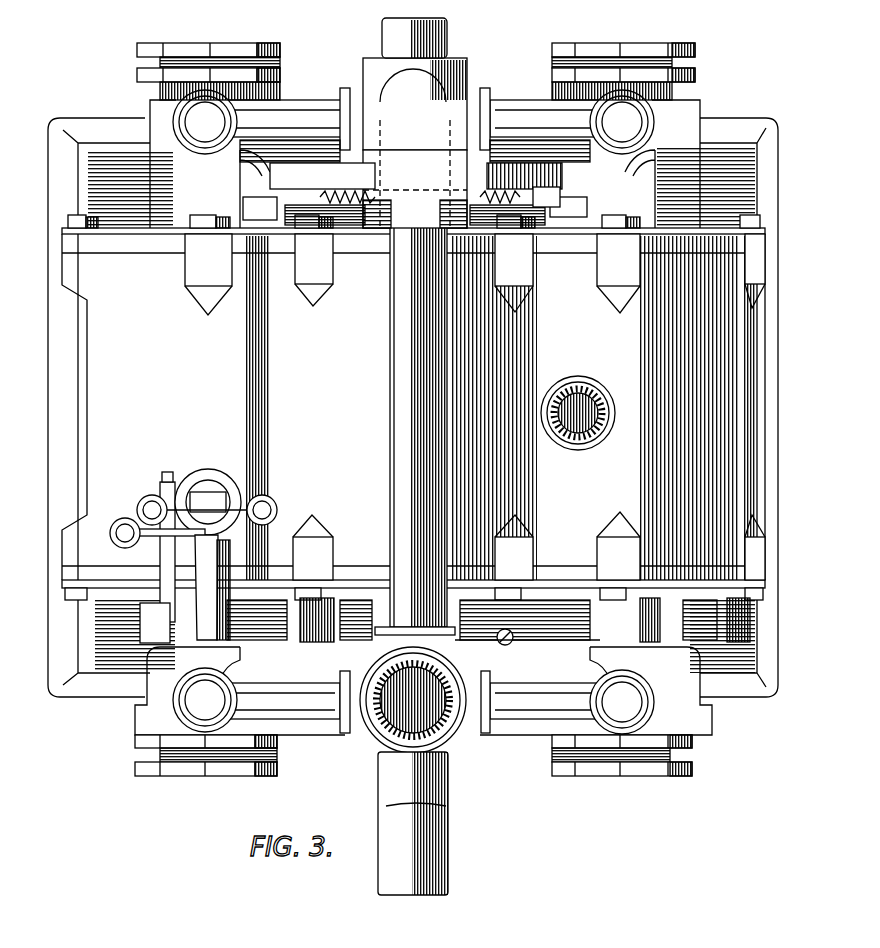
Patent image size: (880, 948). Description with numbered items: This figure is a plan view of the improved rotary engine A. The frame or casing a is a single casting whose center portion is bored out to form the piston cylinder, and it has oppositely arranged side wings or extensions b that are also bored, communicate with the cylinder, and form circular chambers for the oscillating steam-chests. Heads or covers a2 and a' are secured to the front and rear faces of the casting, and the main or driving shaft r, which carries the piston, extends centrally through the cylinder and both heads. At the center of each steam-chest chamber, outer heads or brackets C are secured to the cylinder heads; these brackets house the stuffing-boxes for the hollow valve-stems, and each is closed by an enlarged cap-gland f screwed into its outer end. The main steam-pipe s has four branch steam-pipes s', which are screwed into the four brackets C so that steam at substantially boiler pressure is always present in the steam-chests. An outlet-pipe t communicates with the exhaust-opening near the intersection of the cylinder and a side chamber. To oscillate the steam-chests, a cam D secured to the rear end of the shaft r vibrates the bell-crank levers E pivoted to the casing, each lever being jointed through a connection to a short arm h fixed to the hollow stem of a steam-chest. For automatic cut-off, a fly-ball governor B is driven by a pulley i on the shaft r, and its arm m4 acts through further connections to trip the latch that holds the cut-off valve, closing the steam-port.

The rotary engine A is at (402, 354).
The frame or casing a is at (410, 407).
The rear head or cover a' is at (200, 265).
The front head or cover a2 is at (367, 577).
The side wings or extensions b is at (95, 360).
The main steam-pipe s is at (400, 450).
The branch steam-pipe s' is at (429, 412).
The main or driving shaft r is at (385, 38).
The cam D is at (372, 130).
The stuffing-box bracket C is at (146, 108).
The cap-gland f is at (552, 52).
The bell-crank lever E is at (415, 182).
The arm or lever h is at (243, 204).
The outlet-pipe t is at (583, 392).
The fly-ball governor B is at (192, 478).
The arm m4 is at (150, 612).
The pulley i is at (525, 628).